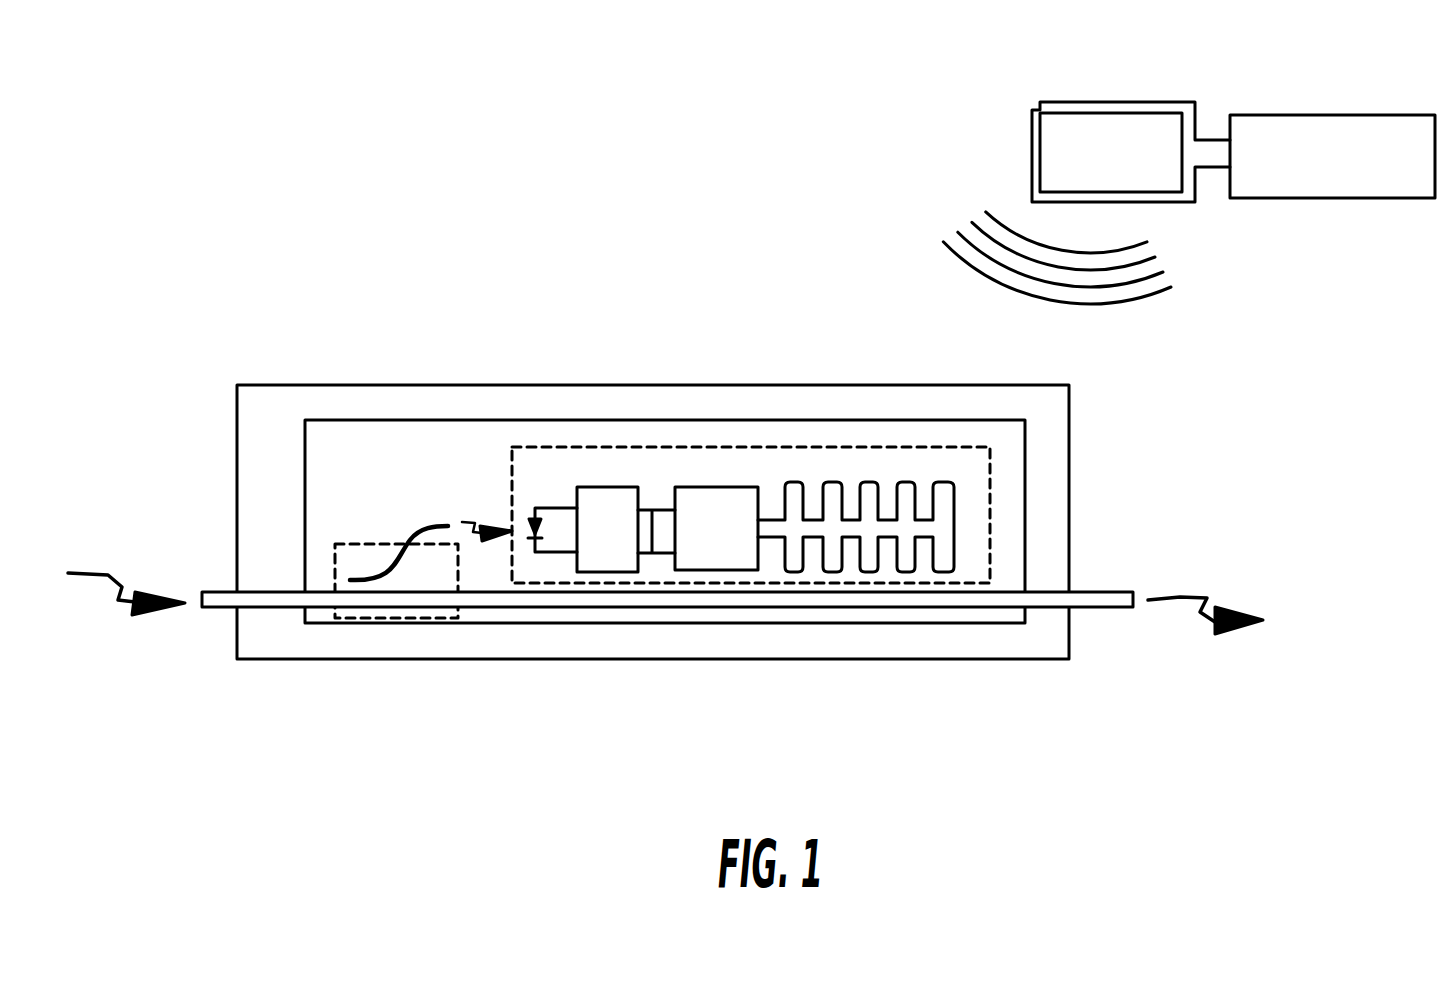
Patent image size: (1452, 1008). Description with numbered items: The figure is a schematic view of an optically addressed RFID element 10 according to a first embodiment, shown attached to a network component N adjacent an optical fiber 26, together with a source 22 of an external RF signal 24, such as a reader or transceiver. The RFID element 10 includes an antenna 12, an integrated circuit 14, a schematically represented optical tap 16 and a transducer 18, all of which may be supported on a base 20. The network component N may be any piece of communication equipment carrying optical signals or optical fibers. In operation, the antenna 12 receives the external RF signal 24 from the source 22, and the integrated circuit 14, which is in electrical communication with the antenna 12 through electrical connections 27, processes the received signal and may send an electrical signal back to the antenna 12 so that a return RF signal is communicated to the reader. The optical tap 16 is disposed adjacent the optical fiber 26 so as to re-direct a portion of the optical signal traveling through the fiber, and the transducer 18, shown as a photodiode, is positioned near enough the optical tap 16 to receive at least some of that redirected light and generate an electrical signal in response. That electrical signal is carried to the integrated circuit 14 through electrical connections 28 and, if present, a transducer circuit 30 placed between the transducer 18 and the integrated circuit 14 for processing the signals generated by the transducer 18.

The optically addressed RFID element 10 is at (694, 429).
The network component N is at (703, 385).
The base 20 is at (1025, 498).
The optical tap 16 is at (401, 650).
The electrical connections 27 is at (790, 540).
The transducer 18 is at (552, 530).
The transducer circuit 30 is at (608, 487).
The electrical connections 28 is at (663, 553).
The integrated circuit 14 is at (718, 553).
The antenna 12 is at (955, 503).
The optical fiber 26 is at (1107, 608).
The source of external RF signal 22 is at (1312, 95).
The external RF signal 24 is at (1103, 307).